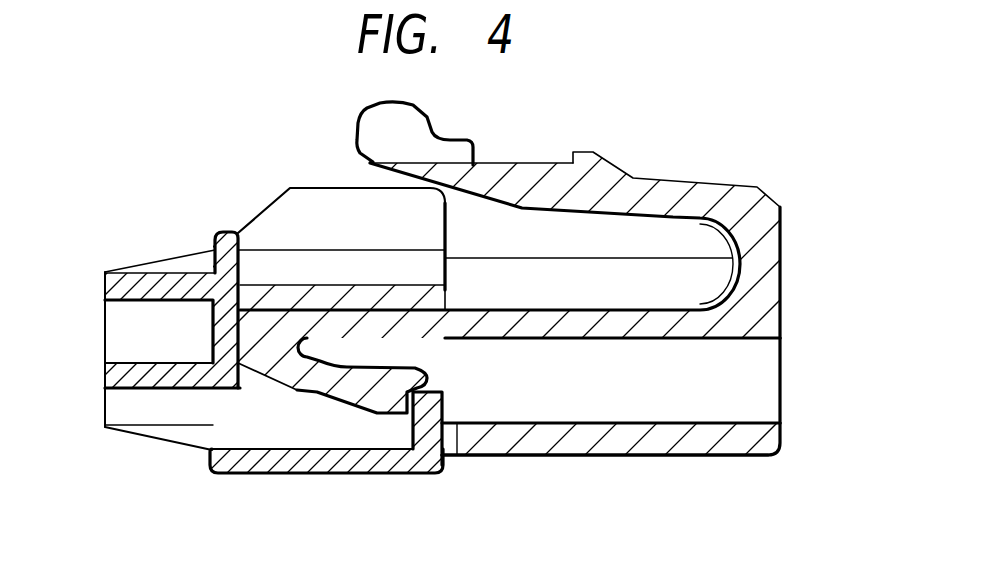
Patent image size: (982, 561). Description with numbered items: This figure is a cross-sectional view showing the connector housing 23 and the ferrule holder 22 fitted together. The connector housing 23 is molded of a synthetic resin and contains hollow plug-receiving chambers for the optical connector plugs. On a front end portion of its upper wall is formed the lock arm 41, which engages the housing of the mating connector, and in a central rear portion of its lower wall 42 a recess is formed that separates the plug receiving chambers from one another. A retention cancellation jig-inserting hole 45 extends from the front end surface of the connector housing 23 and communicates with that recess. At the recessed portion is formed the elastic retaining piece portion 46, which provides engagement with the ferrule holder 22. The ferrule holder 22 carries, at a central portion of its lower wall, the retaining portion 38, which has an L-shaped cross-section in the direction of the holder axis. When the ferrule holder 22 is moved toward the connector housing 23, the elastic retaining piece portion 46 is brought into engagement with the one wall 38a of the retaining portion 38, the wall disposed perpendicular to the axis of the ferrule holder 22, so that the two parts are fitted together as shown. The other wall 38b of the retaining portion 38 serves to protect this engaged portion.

The ferrule holder 22 is at (222, 213).
The connector housing 23 is at (728, 172).
The lock arm 41 is at (487, 178).
The retention cancellation jig-inserting hole 45 is at (765, 377).
The lower wall 42 is at (685, 457).
The elastic retaining piece portion 46 is at (375, 405).
The retaining portion 38 is at (417, 473).
The one wall 38a is at (427, 430).
The other wall 38b is at (230, 465).